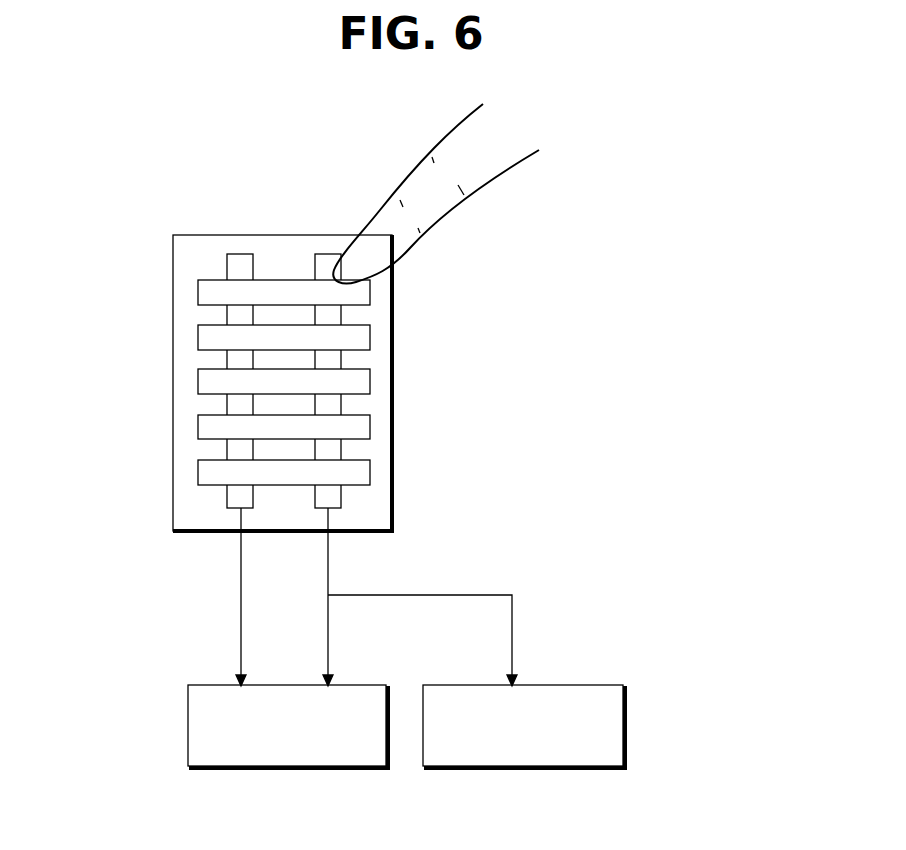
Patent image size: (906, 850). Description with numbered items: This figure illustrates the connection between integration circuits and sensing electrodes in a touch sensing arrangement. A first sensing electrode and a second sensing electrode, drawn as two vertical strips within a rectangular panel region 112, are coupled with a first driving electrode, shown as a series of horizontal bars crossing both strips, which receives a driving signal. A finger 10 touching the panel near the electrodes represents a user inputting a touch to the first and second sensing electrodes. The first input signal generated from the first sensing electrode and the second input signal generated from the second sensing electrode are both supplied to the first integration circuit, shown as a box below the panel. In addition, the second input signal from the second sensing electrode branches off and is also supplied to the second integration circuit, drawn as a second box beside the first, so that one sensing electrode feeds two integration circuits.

The finger 10 is at (403, 182).
The touch panel 112 is at (394, 527).